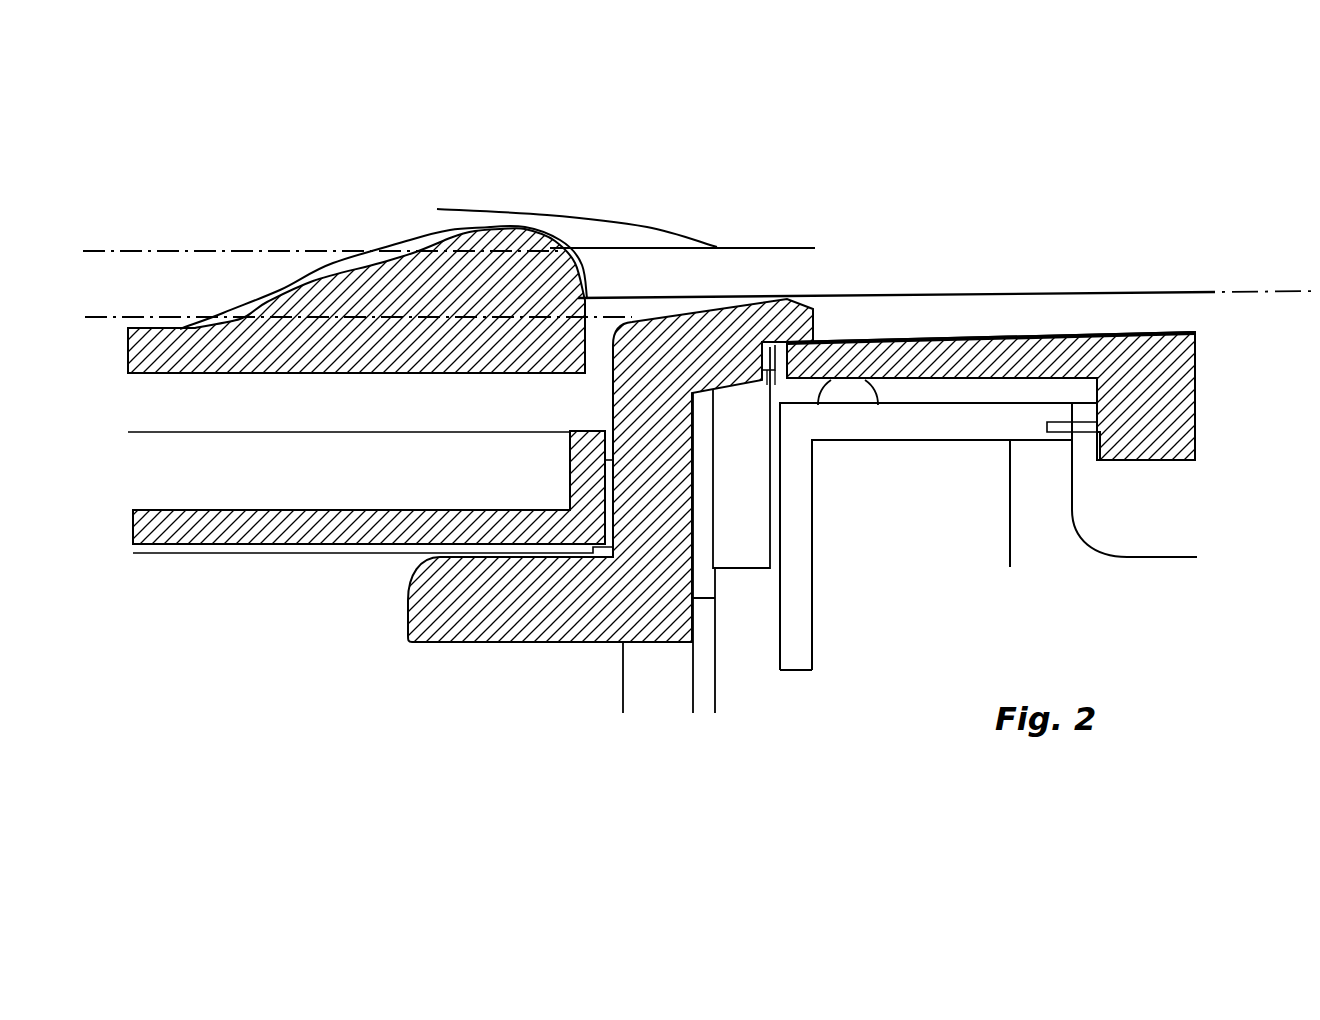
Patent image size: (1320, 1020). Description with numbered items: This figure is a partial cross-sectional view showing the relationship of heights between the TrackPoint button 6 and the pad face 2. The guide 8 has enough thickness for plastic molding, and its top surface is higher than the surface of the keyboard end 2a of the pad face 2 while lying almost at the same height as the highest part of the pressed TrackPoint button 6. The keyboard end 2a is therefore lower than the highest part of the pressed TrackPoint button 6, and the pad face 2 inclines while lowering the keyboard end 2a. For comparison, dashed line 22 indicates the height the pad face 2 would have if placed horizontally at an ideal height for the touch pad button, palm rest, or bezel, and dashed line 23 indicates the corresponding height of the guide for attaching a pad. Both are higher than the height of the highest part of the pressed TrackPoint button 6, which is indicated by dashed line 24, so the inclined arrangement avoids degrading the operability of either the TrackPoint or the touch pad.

The pad face 2 is at (1092, 332).
The keyboard end 2a is at (858, 341).
The TrackPoint button 6 is at (410, 240).
The guide 8 is at (727, 318).
The dashed line 22 is at (1268, 292).
The dashed line 23 is at (232, 251).
The dashed line 24 is at (118, 317).